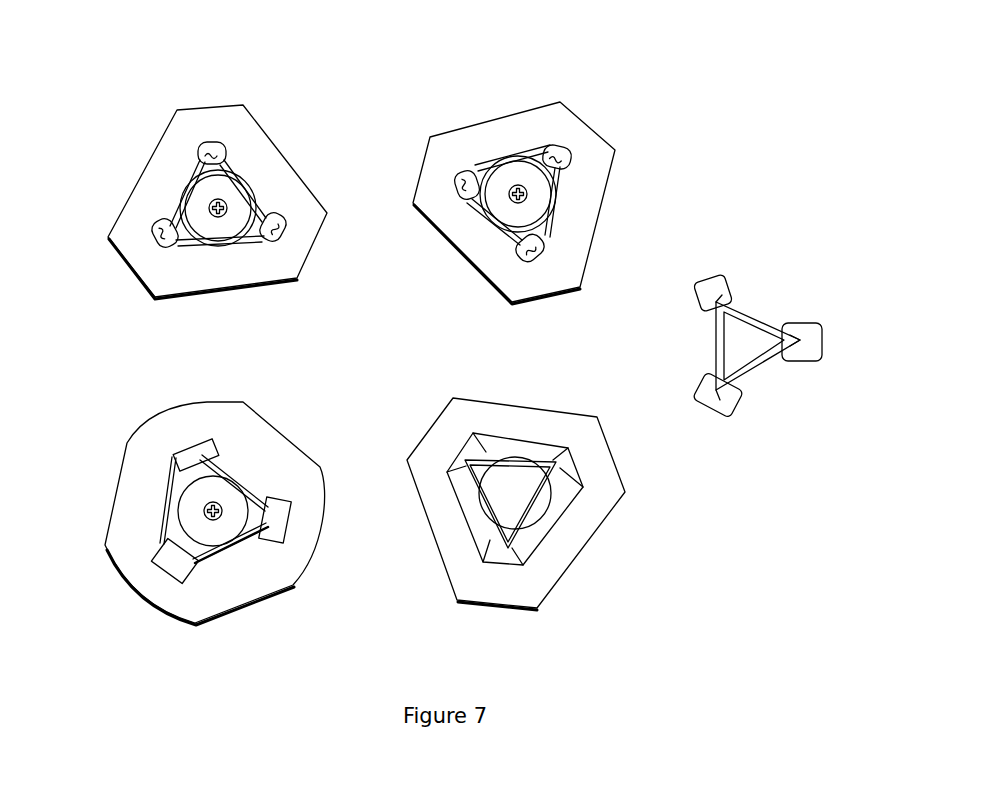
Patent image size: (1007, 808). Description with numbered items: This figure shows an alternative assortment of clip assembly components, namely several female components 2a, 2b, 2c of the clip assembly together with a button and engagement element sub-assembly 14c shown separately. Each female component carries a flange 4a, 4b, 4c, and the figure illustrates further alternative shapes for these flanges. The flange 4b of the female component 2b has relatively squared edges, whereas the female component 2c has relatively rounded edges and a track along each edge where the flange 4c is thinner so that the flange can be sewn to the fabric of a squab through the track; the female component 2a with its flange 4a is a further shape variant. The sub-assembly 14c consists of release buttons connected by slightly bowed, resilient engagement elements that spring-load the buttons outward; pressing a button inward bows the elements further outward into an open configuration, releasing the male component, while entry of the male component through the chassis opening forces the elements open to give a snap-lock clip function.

The female component 2a is at (165, 402).
The female component 2b is at (165, 112).
The female component 2c is at (458, 112).
The flange 4a is at (167, 443).
The flange 4b is at (167, 157).
The flange 4c is at (457, 157).
The button and engagement element sub-assembly 14c is at (740, 278).